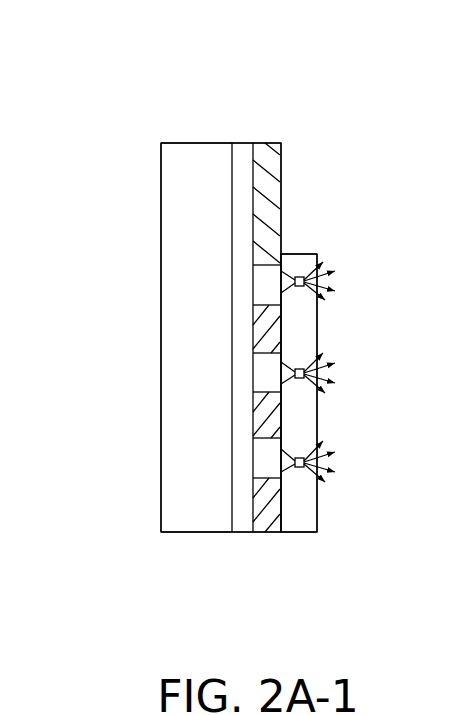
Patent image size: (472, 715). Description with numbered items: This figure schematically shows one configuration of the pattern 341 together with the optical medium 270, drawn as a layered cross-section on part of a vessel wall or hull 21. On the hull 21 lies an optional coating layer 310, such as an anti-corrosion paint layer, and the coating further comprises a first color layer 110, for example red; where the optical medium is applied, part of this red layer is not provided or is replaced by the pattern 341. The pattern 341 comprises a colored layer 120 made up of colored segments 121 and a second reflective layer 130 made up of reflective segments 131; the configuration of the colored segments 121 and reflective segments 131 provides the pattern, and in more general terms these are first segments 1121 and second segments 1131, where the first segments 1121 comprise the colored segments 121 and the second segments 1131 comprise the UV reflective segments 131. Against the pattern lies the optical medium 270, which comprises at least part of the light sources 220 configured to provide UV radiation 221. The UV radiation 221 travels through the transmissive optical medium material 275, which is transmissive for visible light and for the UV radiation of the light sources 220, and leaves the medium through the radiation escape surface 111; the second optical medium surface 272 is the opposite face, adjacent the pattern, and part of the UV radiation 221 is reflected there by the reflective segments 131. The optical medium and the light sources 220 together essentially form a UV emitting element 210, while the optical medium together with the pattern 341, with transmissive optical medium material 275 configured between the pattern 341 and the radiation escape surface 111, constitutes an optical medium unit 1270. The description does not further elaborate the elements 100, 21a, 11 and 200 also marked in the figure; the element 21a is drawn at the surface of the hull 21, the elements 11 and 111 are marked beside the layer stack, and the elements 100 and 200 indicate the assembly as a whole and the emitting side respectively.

The light source module 100 is at (262, 90).
The vessel wall or hull 21 is at (185, 148).
The mounting surface 21a is at (232, 211).
The coating layer 310 is at (238, 523).
The first color layer 110 is at (265, 142).
The base material 11 is at (282, 228).
The radiation escape surface 111 is at (362, 320).
The housing 200 is at (362, 320).
The UV emitting element 210 is at (363, 180).
The second reflective layer 130 is at (159, 295).
The reflective segments 131 is at (159, 295).
The second segments 1131 is at (263, 282).
The colored layer 120 is at (258, 336).
The colored segments 121 is at (150, 495).
The first segments 1121 is at (256, 402).
The optical medium unit 1270 is at (348, 251).
The light sources 220 is at (318, 261).
The UV radiation 221 is at (330, 453).
The second optical medium surface 272 is at (284, 434).
The transmissive optical medium material 275 is at (318, 508).
The optical medium 270 is at (303, 523).
The pattern 341 is at (288, 555).